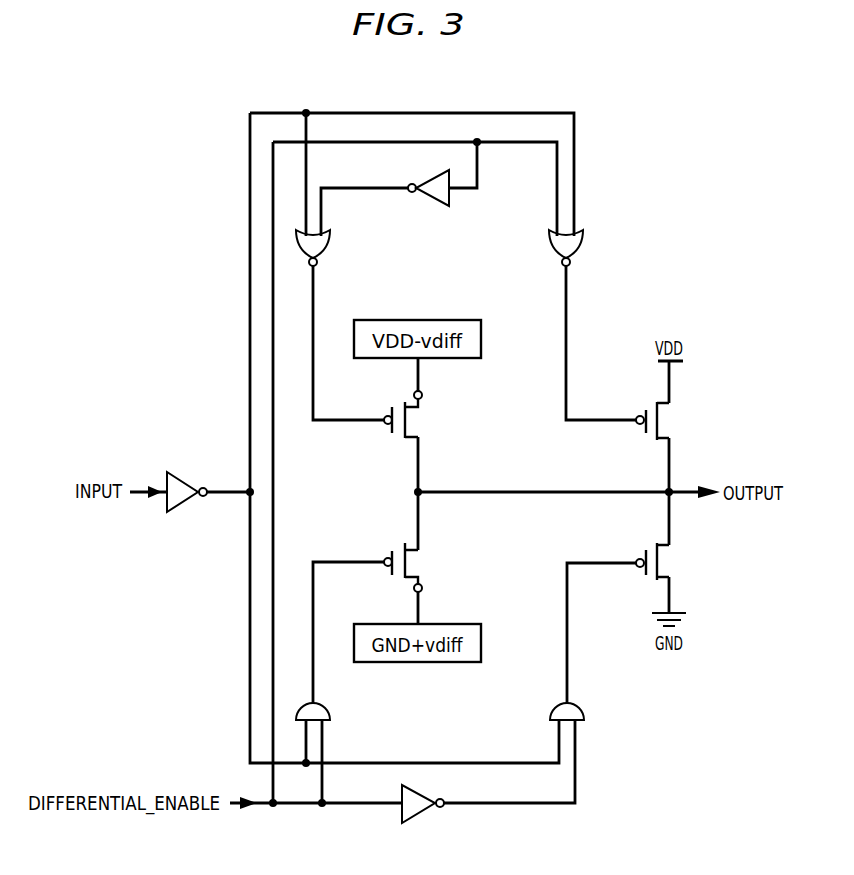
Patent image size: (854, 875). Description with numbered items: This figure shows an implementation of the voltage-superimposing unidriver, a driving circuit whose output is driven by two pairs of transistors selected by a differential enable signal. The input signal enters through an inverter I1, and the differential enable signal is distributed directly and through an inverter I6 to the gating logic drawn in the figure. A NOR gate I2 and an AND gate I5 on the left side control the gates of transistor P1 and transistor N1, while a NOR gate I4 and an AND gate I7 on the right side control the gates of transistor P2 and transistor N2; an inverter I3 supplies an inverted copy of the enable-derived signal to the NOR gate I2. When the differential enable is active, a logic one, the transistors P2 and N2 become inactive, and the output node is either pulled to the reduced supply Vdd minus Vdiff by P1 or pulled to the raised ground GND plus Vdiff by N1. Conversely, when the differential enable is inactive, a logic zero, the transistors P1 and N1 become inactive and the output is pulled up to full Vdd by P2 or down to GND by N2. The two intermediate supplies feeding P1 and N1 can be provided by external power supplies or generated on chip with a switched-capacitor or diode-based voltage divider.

The input inverter I1 is at (185, 476).
The NOR gate I2 is at (326, 245).
The inverter I3 is at (443, 195).
The NOR gate I4 is at (580, 245).
The AND gate I5 is at (308, 700).
The differential enable inverter I6 is at (410, 798).
The AND gate I7 is at (559, 700).
The transistor P1 is at (418, 414).
The transistor P2 is at (669, 423).
The transistor N1 is at (420, 567).
The transistor N2 is at (672, 559).